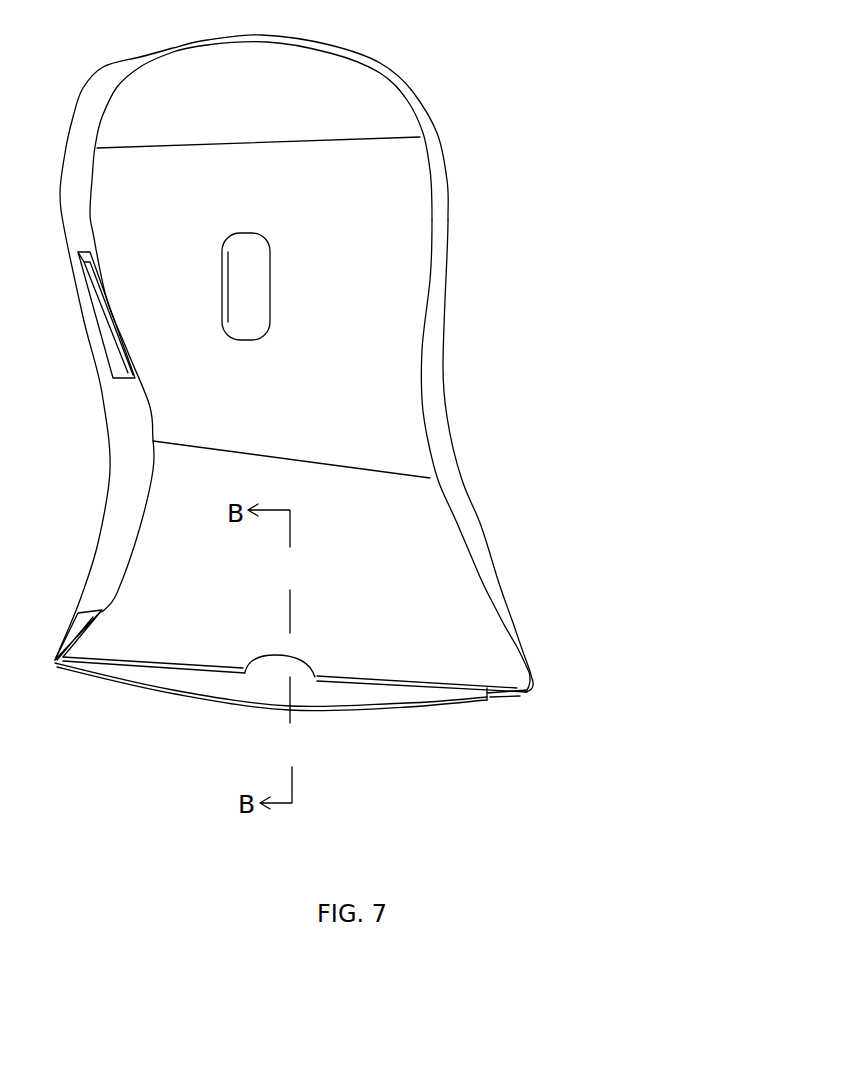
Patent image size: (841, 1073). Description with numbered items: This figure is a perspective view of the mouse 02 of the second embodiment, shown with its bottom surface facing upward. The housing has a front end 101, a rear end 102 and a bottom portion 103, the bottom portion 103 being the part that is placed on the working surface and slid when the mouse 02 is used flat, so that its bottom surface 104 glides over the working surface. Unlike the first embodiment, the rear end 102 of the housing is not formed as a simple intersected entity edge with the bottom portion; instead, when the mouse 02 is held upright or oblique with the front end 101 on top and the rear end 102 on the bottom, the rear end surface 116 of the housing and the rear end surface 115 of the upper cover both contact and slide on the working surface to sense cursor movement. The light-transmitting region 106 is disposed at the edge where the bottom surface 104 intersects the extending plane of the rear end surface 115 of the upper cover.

The mouse 02 is at (585, 128).
The front end 101 is at (372, 90).
The rear end 102 is at (487, 663).
The bottom portion 103 is at (430, 538).
The bottom surface 104 is at (465, 607).
The light-transmitting region 106 is at (268, 655).
The rear end surface of the upper cover 115 is at (407, 705).
The rear end surface of the housing 116 is at (347, 686).